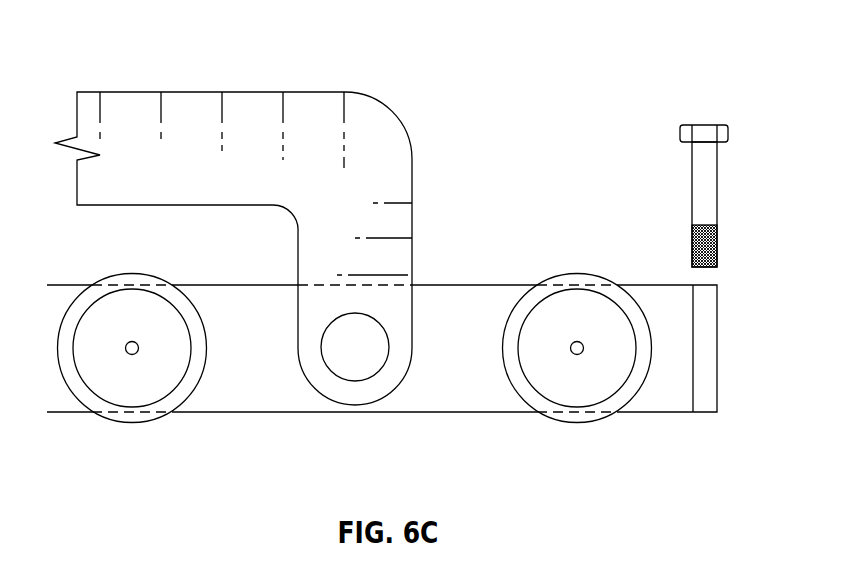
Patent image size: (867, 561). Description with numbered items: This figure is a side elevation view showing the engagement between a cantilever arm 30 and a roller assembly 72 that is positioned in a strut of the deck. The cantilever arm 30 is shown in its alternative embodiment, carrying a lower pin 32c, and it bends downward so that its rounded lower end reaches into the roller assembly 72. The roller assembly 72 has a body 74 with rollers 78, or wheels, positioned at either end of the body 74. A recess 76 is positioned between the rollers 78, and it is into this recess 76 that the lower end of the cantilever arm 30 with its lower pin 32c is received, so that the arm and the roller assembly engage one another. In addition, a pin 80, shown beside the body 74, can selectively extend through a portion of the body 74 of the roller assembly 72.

The cantilever arm 30 is at (248, 108).
The lower pin 32c is at (352, 370).
The roller assembly 72 is at (395, 276).
The body 74 is at (200, 403).
The recess 76 is at (317, 395).
The rollers 78 is at (130, 395).
The pin 80 is at (705, 132).